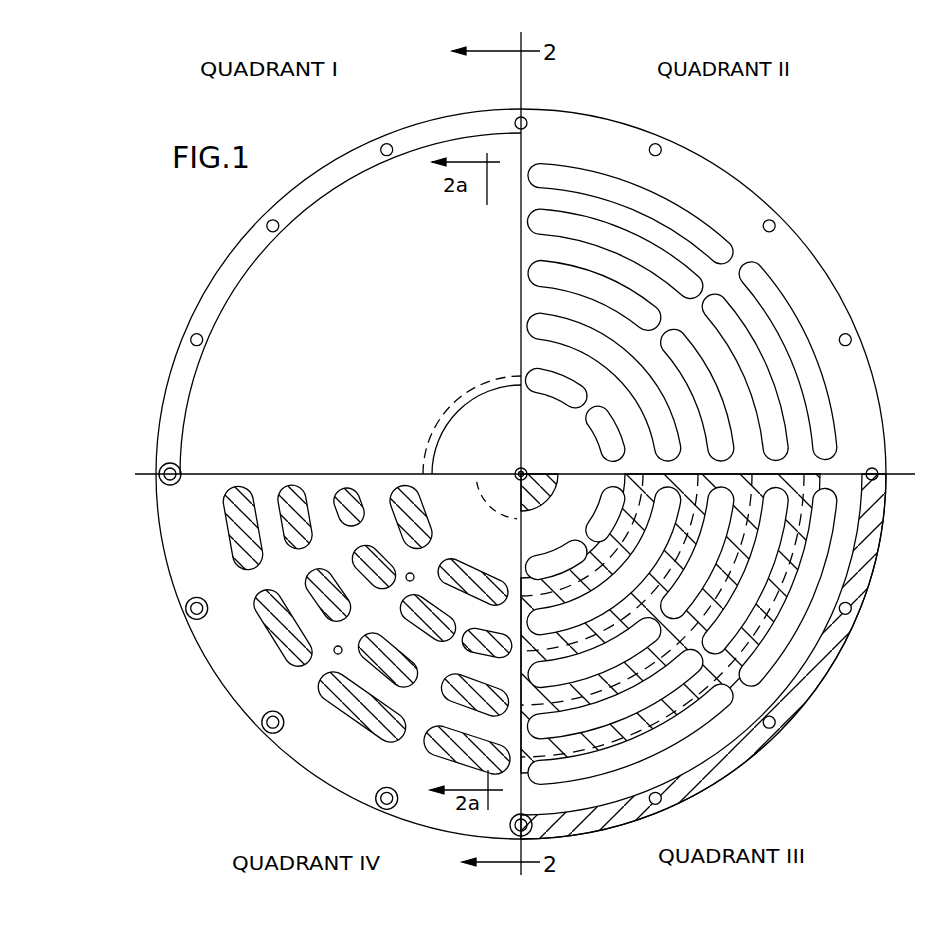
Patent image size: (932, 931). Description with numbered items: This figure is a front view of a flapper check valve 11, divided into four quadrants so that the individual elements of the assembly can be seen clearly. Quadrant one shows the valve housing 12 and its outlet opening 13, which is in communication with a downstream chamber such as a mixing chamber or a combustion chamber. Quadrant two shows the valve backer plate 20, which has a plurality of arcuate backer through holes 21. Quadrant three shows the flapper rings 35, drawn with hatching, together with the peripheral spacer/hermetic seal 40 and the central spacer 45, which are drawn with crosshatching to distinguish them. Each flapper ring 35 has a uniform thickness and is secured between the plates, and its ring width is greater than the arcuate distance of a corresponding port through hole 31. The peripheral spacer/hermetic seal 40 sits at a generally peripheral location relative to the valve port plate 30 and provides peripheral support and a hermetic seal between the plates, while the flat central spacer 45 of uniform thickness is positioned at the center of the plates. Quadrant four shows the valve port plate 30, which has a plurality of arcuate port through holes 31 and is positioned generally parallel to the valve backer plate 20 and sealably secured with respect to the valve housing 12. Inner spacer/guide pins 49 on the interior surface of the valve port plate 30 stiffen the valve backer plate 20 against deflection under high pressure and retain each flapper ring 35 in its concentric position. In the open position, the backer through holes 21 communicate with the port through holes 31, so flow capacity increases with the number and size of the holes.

The flapper check valve 11 is at (836, 233).
The valve housing 12 is at (230, 268).
The outlet opening 13 is at (491, 453).
The valve backer plate 20 is at (797, 413).
The arcuate backer through holes 21 is at (830, 441).
The valve port plate 30 is at (210, 642).
The arcuate port through holes 31 is at (241, 532).
The flapper ring 35 is at (800, 565).
The peripheral spacer/hermetic seal 40 is at (830, 649).
The central spacer 45 is at (543, 491).
The inner spacer/guide pins 49 is at (413, 573).